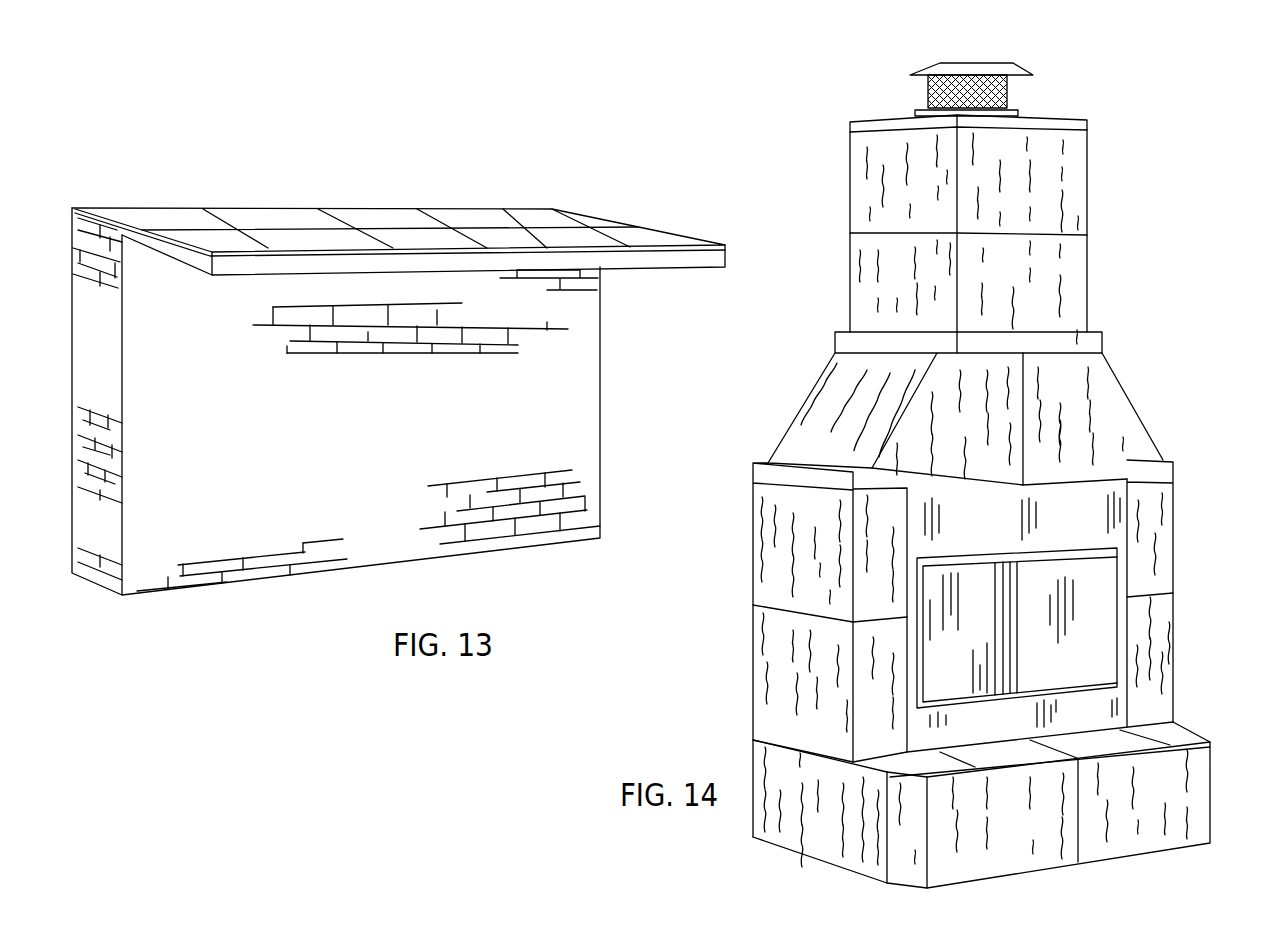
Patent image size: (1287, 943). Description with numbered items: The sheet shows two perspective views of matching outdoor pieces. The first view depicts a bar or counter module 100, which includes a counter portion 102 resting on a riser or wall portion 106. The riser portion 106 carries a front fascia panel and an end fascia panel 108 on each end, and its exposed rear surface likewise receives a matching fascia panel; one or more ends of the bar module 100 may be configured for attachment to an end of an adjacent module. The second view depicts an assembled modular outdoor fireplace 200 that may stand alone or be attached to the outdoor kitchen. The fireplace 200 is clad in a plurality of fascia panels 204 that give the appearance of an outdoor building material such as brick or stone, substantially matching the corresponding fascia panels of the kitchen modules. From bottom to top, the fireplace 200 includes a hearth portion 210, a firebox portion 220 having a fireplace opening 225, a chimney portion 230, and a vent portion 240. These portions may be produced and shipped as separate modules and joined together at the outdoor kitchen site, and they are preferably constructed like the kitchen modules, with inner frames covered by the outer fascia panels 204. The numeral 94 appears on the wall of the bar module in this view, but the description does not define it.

In FIG. 13, the bar module 100 is at (374, 193).
In FIG. 13, the counter portion 102 is at (613, 232).
In FIG. 13, the wall panel 94 is at (406, 415).
In FIG. 13, the riser portion 106 is at (574, 498).
In FIG. 13, the end fascia panel 108 is at (83, 557).
In FIG. 14, the outdoor fireplace 200 is at (1103, 266).
In FIG. 14, the fascia panels 204 is at (1078, 162).
In FIG. 14, the vent portion 240 is at (928, 93).
In FIG. 14, the chimney portion 230 is at (1115, 387).
In FIG. 14, the firebox portion 220 is at (1163, 513).
In FIG. 14, the fireplace opening 225 is at (1094, 607).
In FIG. 14, the hearth portion 210 is at (1202, 760).